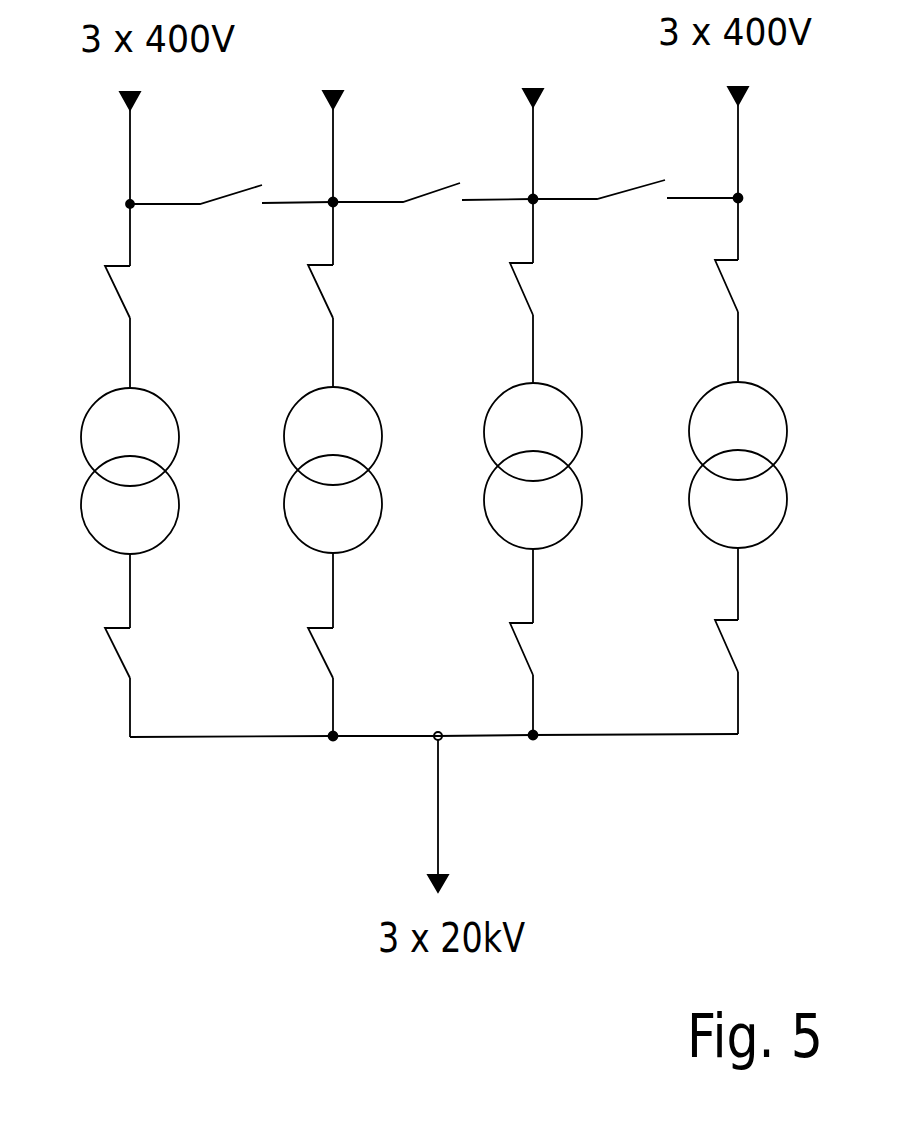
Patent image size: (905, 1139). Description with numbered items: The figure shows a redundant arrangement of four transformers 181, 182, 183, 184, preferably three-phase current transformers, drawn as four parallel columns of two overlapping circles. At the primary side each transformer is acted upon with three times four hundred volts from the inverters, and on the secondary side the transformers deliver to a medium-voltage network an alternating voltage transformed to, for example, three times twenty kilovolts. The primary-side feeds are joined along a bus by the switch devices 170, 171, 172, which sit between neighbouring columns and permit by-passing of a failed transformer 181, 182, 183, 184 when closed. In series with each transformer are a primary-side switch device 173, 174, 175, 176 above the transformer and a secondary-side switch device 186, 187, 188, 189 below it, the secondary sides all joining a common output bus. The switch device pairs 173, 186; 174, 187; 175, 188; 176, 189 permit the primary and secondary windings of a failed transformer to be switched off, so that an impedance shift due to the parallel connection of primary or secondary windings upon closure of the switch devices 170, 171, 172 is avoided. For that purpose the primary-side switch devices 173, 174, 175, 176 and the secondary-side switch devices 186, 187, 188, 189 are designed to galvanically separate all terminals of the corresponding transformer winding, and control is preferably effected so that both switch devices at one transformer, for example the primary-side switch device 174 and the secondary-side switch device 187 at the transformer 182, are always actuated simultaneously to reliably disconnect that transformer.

The switch device 170 is at (231, 181).
The switch device 171 is at (433, 177).
The switch device 172 is at (635, 175).
The switch device 173 is at (87, 281).
The switch device 174 is at (290, 280).
The switch device 175 is at (491, 278).
The switch device 176 is at (715, 260).
The transformer 181 is at (100, 462).
The transformer 182 is at (302, 458).
The transformer 183 is at (503, 455).
The transformer 184 is at (706, 452).
The switch device 186 is at (87, 642).
The switch device 187 is at (291, 642).
The switch device 188 is at (491, 638).
The switch device 189 is at (696, 636).